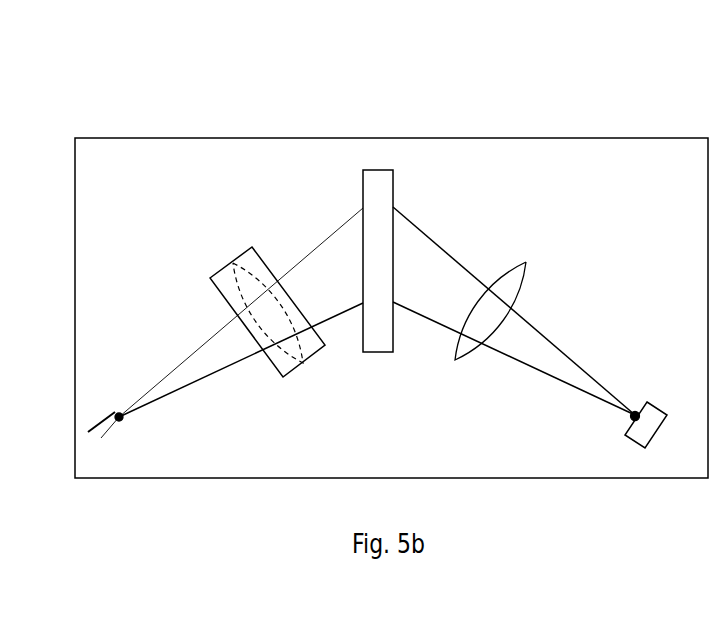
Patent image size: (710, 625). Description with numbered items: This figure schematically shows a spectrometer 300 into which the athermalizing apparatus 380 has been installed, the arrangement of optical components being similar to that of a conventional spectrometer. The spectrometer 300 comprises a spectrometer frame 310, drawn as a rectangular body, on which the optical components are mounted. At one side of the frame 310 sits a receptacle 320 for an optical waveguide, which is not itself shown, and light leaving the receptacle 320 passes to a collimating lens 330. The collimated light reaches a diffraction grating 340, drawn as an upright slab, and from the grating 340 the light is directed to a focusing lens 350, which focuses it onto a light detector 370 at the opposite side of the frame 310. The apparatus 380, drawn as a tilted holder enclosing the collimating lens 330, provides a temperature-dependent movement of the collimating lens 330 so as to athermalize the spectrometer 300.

The spectrometer 300 is at (368, 112).
The spectrometer frame 310 is at (627, 138).
The receptacle 320 is at (105, 434).
The collimating lens 330 is at (280, 305).
The diffraction grating 340 is at (372, 352).
The focusing lens 350 is at (520, 262).
The light detector 370 is at (652, 403).
The apparatus 380 is at (220, 268).